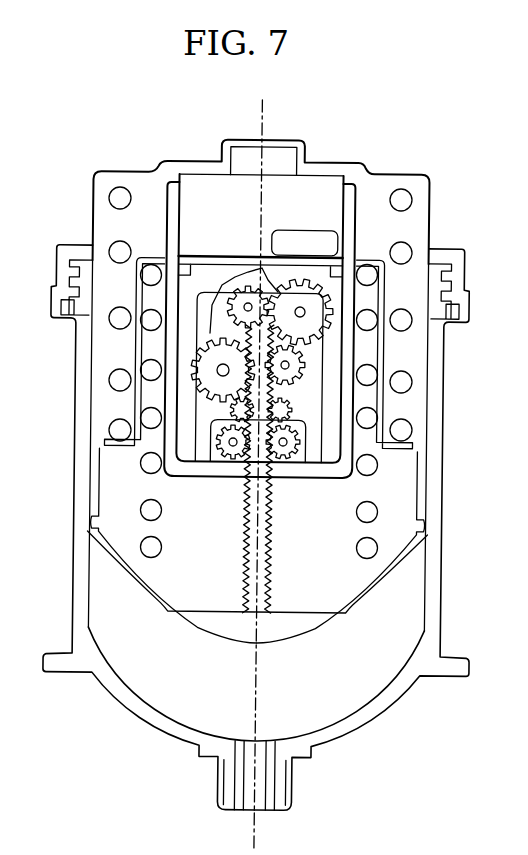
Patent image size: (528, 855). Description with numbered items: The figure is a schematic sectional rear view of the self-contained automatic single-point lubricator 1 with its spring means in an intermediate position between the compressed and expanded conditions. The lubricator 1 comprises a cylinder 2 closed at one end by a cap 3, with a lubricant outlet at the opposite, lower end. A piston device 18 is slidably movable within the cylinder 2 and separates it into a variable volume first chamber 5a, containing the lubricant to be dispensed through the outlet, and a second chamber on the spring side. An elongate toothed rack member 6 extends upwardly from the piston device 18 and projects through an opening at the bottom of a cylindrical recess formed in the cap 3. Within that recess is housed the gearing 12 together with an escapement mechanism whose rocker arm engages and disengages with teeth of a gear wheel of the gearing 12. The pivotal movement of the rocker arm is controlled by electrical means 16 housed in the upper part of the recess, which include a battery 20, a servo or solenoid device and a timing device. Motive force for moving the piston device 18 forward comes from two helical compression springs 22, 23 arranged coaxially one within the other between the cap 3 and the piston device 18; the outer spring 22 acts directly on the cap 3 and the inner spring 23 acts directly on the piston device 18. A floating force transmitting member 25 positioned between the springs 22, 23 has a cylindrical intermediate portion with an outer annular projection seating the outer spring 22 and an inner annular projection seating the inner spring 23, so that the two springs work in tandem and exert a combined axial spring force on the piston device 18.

The single-point lubricator 1 is at (458, 531).
The cylinder 2 is at (436, 600).
The cap 3 is at (423, 206).
The first chamber 5a is at (348, 677).
The toothed rack member 6 is at (280, 537).
The gearing 12 is at (305, 366).
The electrical means 16 is at (235, 213).
The piston device 18 is at (220, 624).
The battery 20 is at (320, 247).
The outer helical compression spring 22 is at (405, 383).
The inner helical compression spring 23 is at (368, 512).
The force transmitting member 25 is at (390, 410).